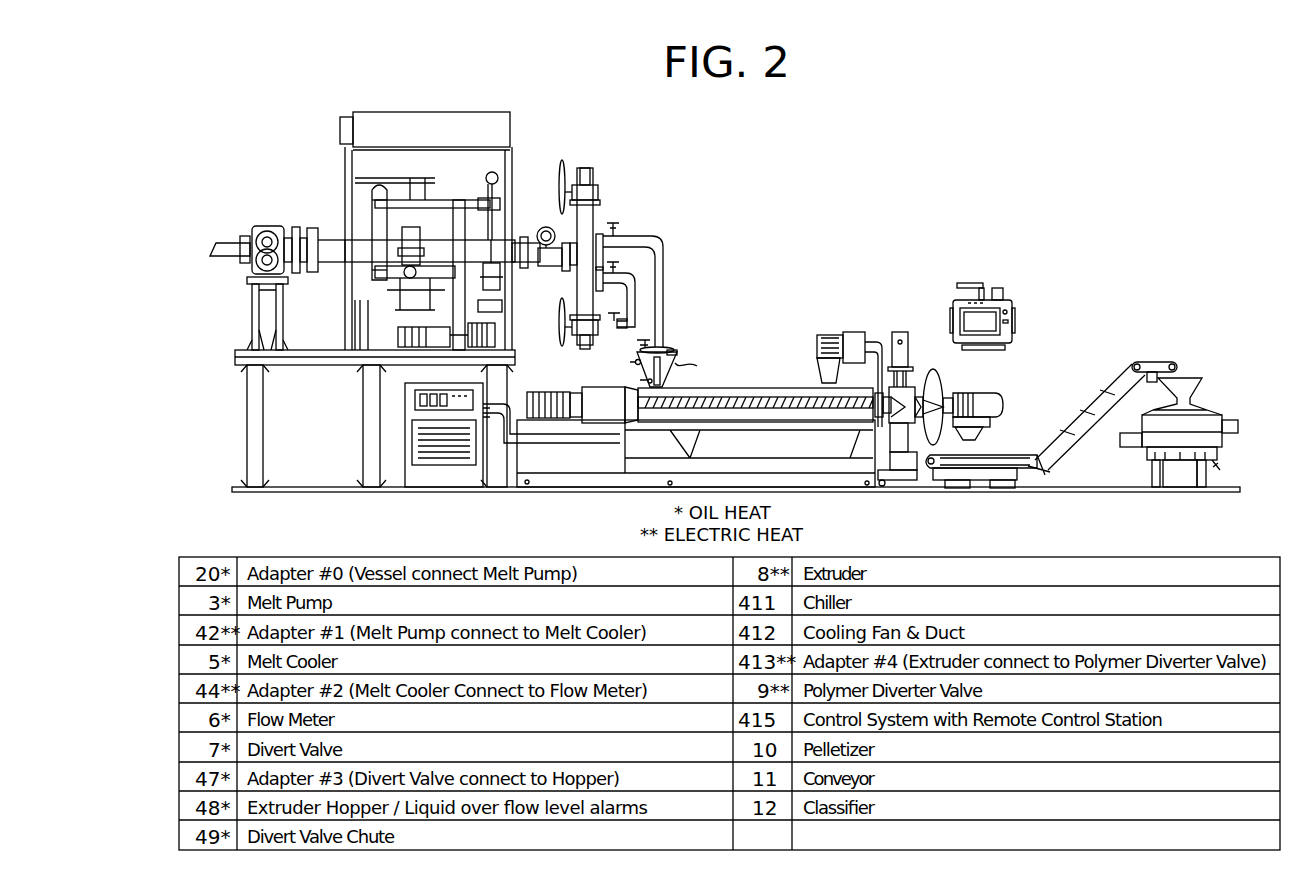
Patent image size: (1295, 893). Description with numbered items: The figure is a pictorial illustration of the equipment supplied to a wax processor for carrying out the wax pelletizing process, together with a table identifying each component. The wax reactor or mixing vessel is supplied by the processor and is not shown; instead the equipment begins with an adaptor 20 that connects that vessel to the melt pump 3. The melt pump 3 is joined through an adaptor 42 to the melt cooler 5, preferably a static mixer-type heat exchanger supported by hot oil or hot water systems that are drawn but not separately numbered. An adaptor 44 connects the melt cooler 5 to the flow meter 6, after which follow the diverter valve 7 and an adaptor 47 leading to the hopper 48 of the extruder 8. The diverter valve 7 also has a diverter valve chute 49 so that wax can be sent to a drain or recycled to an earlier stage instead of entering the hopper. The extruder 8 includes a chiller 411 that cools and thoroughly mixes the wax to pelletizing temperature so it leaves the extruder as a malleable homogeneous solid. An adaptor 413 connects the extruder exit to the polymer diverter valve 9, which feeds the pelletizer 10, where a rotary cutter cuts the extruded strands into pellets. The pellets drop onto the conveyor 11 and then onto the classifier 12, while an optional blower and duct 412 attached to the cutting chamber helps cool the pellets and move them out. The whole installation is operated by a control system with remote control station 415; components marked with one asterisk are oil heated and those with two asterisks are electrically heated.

The adaptor 20 is at (222, 243).
The melt pump 3 is at (268, 228).
The adaptor 42 is at (299, 227).
The melt cooler 5 is at (431, 112).
The adaptor 44 is at (524, 243).
The flow meter 6 is at (547, 227).
The diverter valve 7 is at (582, 168).
The adaptor 47 is at (633, 236).
The hopper 48 is at (663, 367).
The diverter valve chute 49 is at (617, 328).
The extruder 8 is at (766, 390).
The chiller 411 is at (405, 413).
The blower and duct 412 is at (830, 335).
The adaptor 413 is at (881, 360).
The polymer diverter valve 9 is at (908, 340).
The control system with remote control station 415 is at (1013, 318).
The pelletizer 10 is at (1003, 403).
The conveyor 11 is at (1153, 362).
The classifier 12 is at (1232, 420).